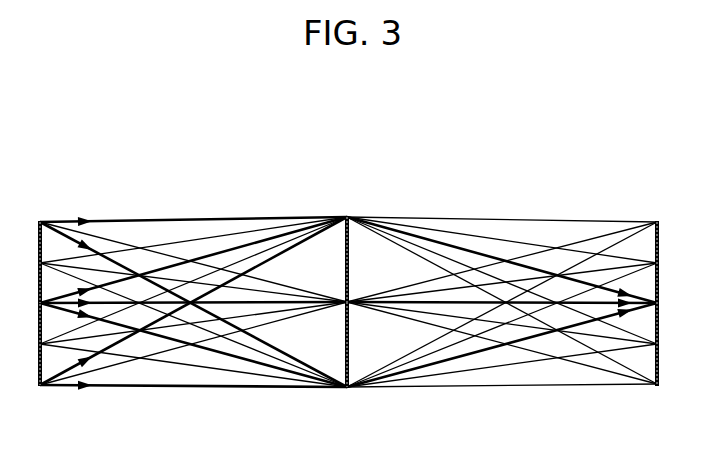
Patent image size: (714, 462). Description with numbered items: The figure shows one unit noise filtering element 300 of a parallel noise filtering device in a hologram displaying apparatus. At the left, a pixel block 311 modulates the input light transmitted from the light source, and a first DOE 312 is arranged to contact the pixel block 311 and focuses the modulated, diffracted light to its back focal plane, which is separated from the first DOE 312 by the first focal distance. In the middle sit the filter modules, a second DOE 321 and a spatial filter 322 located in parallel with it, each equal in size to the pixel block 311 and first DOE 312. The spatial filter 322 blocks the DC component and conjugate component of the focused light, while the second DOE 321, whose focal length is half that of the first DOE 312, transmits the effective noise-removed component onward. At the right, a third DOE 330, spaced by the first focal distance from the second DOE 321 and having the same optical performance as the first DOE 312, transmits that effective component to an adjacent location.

The unit noise filtering element 300 is at (358, 131).
The pixel block 311 is at (40, 222).
The first DOE 312 is at (42, 367).
The second DOE 321 is at (349, 240).
The spatial filter 322 is at (349, 362).
The third DOE 330 is at (656, 222).